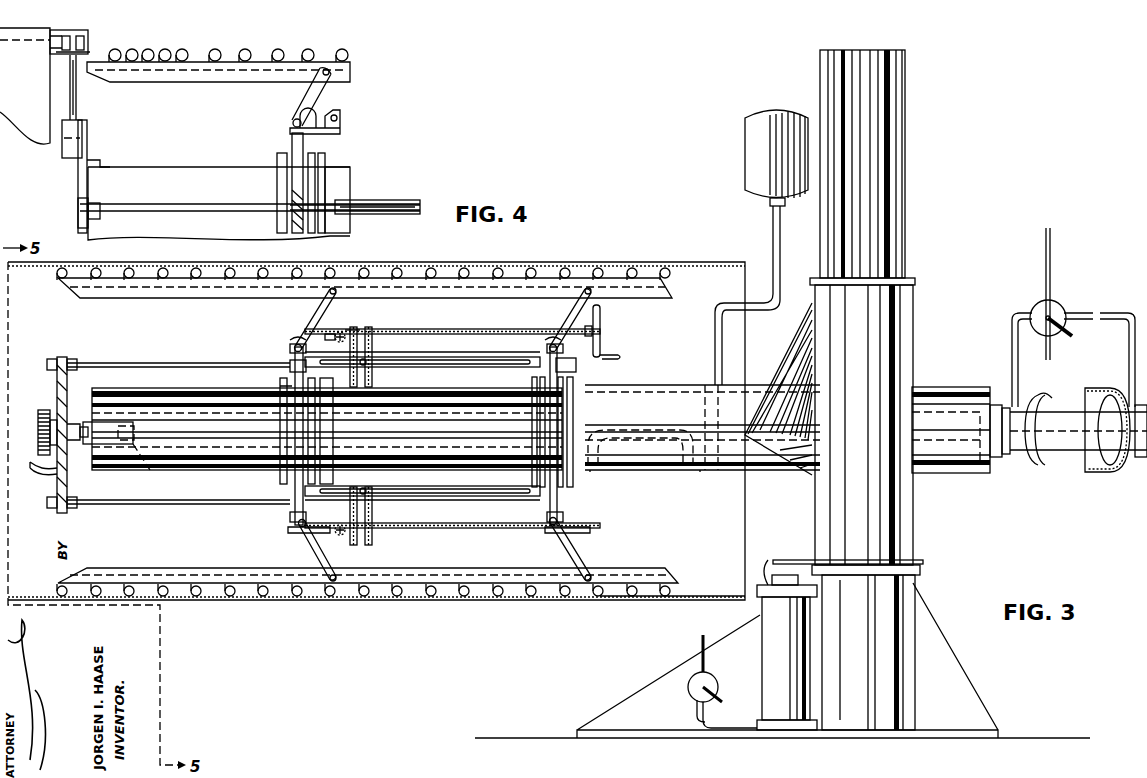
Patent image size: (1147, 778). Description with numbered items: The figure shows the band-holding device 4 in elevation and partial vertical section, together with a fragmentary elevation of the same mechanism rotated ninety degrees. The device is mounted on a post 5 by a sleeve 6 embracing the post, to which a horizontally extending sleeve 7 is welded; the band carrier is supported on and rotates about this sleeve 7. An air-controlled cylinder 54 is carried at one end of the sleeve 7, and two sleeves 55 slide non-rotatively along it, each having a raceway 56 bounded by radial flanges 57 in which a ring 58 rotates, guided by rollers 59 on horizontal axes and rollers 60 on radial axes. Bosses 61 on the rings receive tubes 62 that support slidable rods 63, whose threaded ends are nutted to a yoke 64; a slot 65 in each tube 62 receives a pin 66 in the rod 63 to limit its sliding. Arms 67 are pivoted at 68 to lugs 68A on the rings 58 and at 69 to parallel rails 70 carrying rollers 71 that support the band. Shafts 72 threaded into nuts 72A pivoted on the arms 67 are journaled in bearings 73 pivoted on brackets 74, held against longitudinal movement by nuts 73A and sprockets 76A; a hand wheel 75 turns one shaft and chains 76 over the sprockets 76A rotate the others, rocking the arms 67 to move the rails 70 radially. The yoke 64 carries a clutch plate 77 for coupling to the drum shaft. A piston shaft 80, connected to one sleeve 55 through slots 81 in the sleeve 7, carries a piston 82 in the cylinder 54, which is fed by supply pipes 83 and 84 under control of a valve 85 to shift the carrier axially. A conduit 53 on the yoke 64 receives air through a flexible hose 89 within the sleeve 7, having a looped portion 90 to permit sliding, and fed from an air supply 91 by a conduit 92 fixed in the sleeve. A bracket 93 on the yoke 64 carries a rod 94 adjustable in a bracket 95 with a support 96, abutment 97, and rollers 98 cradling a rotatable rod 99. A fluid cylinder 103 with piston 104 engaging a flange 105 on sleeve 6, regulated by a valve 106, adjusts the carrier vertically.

In FIG. 3, the band-holding device 4 is at (614, 600).
In FIG. 3, the post 5 is at (906, 174).
In FIG. 3, the sleeve 6 is at (906, 322).
In FIG. 4, the horizontally extending sleeve 7 is at (145, 176).
In FIG. 3, the horizontally extending sleeve 7 is at (96, 470).
In FIG. 3, the conduit 53 is at (33, 470).
In FIG. 3, the air-controlled cylinder 54 is at (1065, 452).
In FIG. 4, the sleeves 55 is at (278, 160).
In FIG. 3, the sleeves 55 is at (578, 413).
In FIG. 3, the raceway 56 is at (288, 393).
In FIG. 3, the radial flanges 57 is at (576, 372).
In FIG. 4, the ring 58 is at (295, 182).
In FIG. 3, the ring 58 is at (290, 358).
In FIG. 3, the rollers 59 is at (292, 363).
In FIG. 3, the rollers 60 is at (290, 390).
In FIG. 3, the bosses 61 is at (292, 515).
In FIG. 4, the tubes 62 is at (366, 222).
In FIG. 3, the tubes 62 is at (510, 360).
In FIG. 4, the slidable rods 63 is at (221, 205).
In FIG. 3, the slidable rods 63 is at (118, 363).
In FIG. 4, the yoke 64 is at (82, 224).
In FIG. 3, the yoke 64 is at (60, 505).
In FIG. 4, the slot 65 is at (400, 201).
In FIG. 3, the slot 65 is at (440, 355).
In FIG. 4, the pins 66 is at (365, 200).
In FIG. 3, the pins 66 is at (368, 361).
In FIG. 4, the arms 67 is at (310, 97).
In FIG. 3, the arms 67 is at (316, 316).
In FIG. 4, the pivot 68 is at (292, 123).
In FIG. 3, the pivot 68 is at (295, 347).
In FIG. 3, the lugs 68A is at (292, 346).
In FIG. 4, the pivot 69 is at (328, 68).
In FIG. 3, the pivot 69 is at (336, 295).
In FIG. 4, the rails 70 is at (215, 78).
In FIG. 3, the rails 70 is at (206, 292).
In FIG. 4, the rollers 71 is at (248, 52).
In FIG. 3, the rollers 71 is at (151, 266).
In FIG. 3, the shafts 72 is at (412, 330).
In FIG. 3, the nuts 72A is at (585, 330).
In FIG. 3, the bearings 73 is at (347, 334).
In FIG. 3, the nuts 73A is at (345, 331).
In FIG. 4, the brackets 74 is at (334, 114).
In FIG. 3, the brackets 74 is at (312, 536).
In FIG. 3, the hand wheel 75 is at (602, 350).
In FIG. 3, the chains 76 is at (373, 386).
In FIG. 3, the sprockets 76A is at (372, 330).
In FIG. 3, the clutch plate 77 is at (40, 426).
In FIG. 3, the piston shaft 80 is at (690, 432).
In FIG. 3, the slots 81 is at (163, 430).
In FIG. 3, the piston 82 is at (1110, 457).
In FIG. 3, the supply pipe 83 is at (1012, 357).
In FIG. 3, the supply pipe 84 is at (1129, 366).
In FIG. 3, the valve 85 is at (1063, 310).
In FIG. 3, the flexible hose 89 is at (148, 472).
In FIG. 3, the looped portion 90 is at (664, 472).
In FIG. 3, the air supply 91 is at (742, 131).
In FIG. 3, the conduit 92 is at (771, 312).
In FIG. 4, the bracket 93 is at (83, 135).
In FIG. 3, the bracket 93 is at (57, 396).
In FIG. 4, the rod 94 is at (77, 100).
In FIG. 4, the bracket 95 is at (70, 152).
In FIG. 4, the support 96 is at (60, 54).
In FIG. 4, the abutment 97 is at (90, 45).
In FIG. 4, the rollers 98 is at (62, 43).
In FIG. 4, the rod 99 is at (84, 31).
In FIG. 3, the fluid cylinder 103 is at (795, 666).
In FIG. 3, the piston 104 is at (768, 562).
In FIG. 3, the flange 105 is at (780, 560).
In FIG. 3, the valve 106 is at (688, 696).